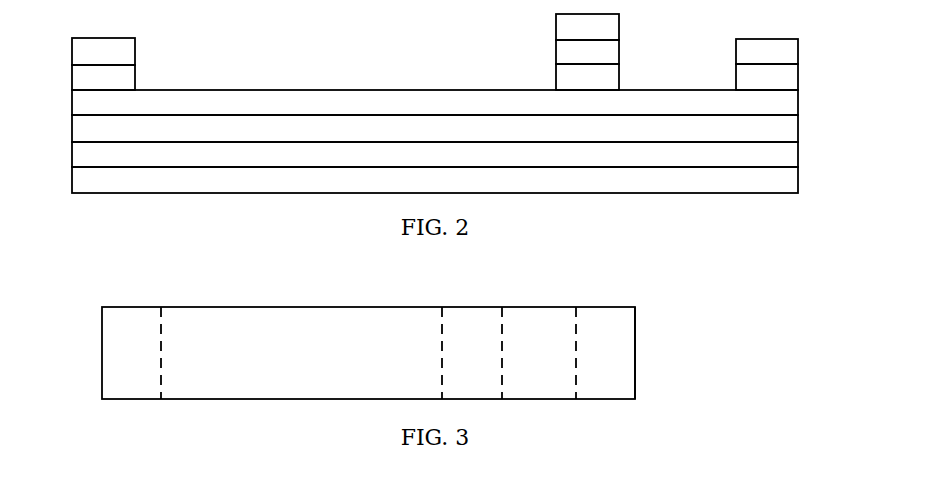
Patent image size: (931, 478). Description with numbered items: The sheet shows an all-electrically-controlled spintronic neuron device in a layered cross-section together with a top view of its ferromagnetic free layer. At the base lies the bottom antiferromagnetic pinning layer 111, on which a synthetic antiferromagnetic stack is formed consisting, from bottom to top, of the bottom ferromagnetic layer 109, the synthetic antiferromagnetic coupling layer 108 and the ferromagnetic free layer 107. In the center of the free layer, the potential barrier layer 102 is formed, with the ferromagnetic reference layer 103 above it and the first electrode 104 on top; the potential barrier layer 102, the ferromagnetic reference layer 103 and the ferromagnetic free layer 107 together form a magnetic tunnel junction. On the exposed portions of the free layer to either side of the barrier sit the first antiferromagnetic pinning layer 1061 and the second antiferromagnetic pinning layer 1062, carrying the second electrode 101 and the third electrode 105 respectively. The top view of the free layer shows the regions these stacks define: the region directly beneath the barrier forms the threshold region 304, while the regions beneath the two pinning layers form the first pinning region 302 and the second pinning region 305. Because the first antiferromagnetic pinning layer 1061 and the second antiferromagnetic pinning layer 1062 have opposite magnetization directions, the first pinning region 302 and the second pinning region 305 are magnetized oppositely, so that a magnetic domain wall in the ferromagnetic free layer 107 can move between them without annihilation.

In FIG. 2, the second electrode 101 is at (103, 51).
In FIG. 2, the first antiferromagnetic pinning layer 1061 is at (103, 77).
In FIG. 2, the potential barrier layer 102 is at (587, 77).
In FIG. 2, the ferromagnetic reference layer 103 is at (587, 52).
In FIG. 2, the first electrode 104 is at (587, 27).
In FIG. 2, the third electrode 105 is at (767, 51).
In FIG. 2, the second antiferromagnetic pinning layer 1062 is at (767, 77).
In FIG. 2, the ferromagnetic free layer 107 is at (435, 102).
In FIG. 2, the synthetic antiferromagnetic coupling layer 108 is at (435, 128).
In FIG. 2, the bottom ferromagnetic layer 109 is at (435, 154).
In FIG. 2, the bottom antiferromagnetic pinning layer 111 is at (435, 180).
In FIG. 3, the first pinning region 302 is at (201, 337).
In FIG. 3, the threshold region 304 is at (472, 353).
In FIG. 3, the second pinning region 305 is at (660, 337).